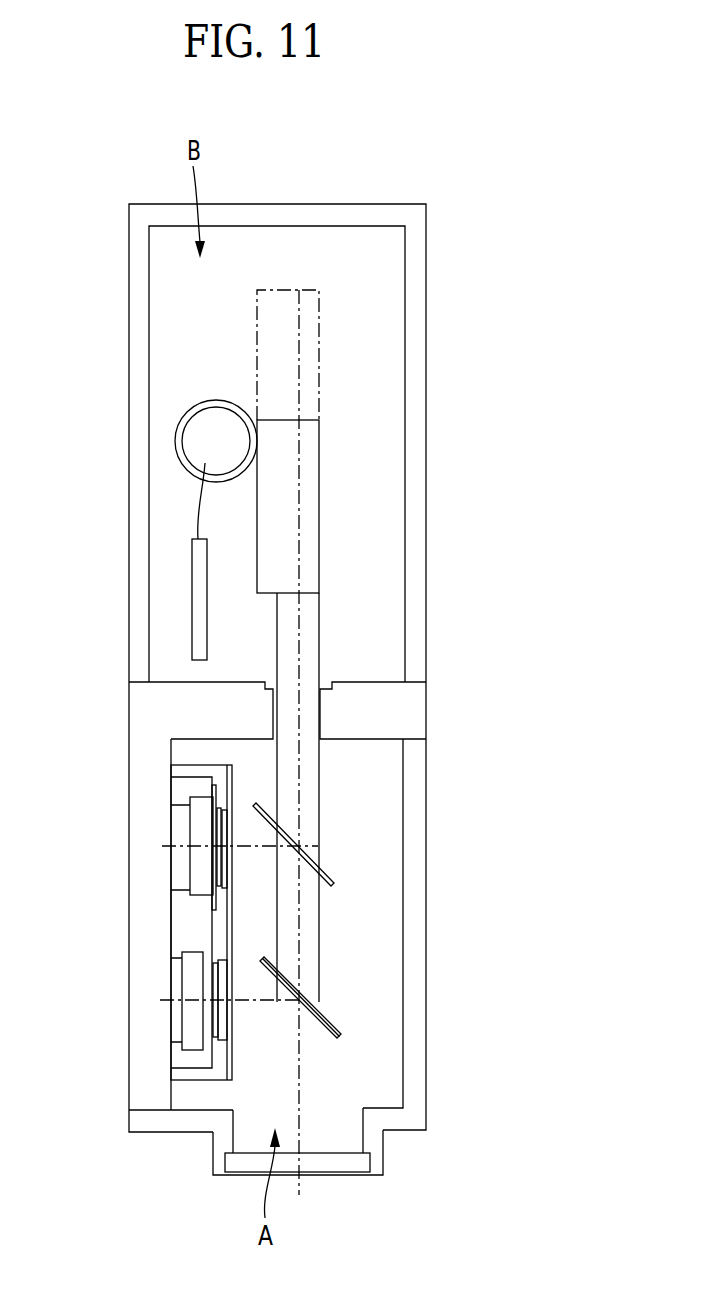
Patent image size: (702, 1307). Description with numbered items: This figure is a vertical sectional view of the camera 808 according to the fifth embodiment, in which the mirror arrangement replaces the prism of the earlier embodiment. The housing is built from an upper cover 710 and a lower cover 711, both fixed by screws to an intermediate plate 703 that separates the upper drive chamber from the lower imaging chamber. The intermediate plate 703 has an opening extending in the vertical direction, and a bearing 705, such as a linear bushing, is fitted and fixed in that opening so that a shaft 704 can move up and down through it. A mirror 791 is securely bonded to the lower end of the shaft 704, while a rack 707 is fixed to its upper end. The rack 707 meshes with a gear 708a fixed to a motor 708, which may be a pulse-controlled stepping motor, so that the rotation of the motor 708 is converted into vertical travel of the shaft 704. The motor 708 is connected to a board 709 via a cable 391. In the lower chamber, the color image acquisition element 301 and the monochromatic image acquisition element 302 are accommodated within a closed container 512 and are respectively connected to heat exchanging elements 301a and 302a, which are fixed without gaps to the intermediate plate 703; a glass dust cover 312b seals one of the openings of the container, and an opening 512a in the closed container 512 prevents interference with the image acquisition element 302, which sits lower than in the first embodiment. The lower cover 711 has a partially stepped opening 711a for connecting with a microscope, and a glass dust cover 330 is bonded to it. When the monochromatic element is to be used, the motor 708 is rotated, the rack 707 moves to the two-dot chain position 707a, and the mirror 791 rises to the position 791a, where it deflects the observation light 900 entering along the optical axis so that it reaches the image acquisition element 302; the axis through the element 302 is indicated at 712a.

The camera 808 is at (381, 174).
The upper cover 710 is at (410, 250).
The position of rack 707a is at (319, 366).
The rack 707 is at (319, 538).
The shaft 704 is at (310, 916).
The motor 708 is at (190, 441).
The gear 708a is at (215, 398).
The cable 391 is at (203, 506).
The board 709 is at (192, 600).
The bearing 705 is at (320, 716).
The intermediate plate 703 is at (140, 1085).
The lower cover 711 is at (413, 1086).
The opening 711a is at (213, 1152).
The glass dust cover 330 is at (353, 1163).
The observation light 900 is at (299, 1077).
The closed container 512 is at (225, 928).
The opening 512a is at (200, 790).
The monochromatic image acquisition element 302 is at (195, 833).
The heat exchanging element 302a is at (178, 868).
The glass dust cover 312b is at (214, 812).
The position of mirror 791a is at (322, 862).
The mirror 791 is at (322, 1012).
The color image acquisition element 301 is at (190, 1033).
The heat exchanging element 301a is at (176, 972).
The second optical axis 712a is at (192, 1012).